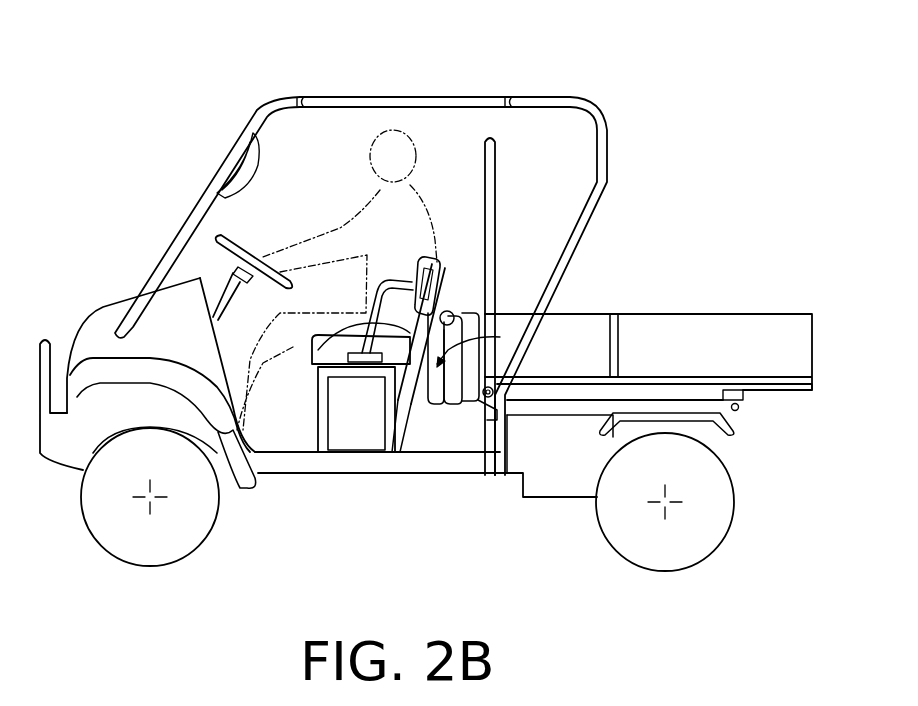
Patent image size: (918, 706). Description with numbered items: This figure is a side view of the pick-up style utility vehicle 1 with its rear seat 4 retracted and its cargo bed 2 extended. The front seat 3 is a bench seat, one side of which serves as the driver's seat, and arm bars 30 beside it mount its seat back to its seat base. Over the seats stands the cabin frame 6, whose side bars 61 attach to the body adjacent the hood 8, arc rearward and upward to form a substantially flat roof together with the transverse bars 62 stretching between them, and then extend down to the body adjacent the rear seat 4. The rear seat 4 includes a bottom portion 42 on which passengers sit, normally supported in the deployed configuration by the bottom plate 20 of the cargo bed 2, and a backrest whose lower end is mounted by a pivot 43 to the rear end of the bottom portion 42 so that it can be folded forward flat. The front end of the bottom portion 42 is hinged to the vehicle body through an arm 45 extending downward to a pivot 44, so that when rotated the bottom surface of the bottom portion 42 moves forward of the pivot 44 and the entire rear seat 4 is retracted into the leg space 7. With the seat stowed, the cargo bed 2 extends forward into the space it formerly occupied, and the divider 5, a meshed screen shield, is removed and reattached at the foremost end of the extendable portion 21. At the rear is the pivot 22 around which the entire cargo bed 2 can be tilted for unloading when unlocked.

The utility vehicle 1 is at (172, 202).
The cargo bed 2 is at (768, 315).
The front seat 3 is at (428, 267).
The rear seat 4 is at (467, 410).
The divider 5 is at (497, 162).
The cabin frame 6 is at (587, 100).
The leg space 7 is at (432, 427).
The hood 8 is at (103, 308).
The bottom plate 20 is at (793, 390).
The extendable portion 21 is at (580, 327).
The pivot 22 is at (740, 410).
The arm bars 30 is at (317, 367).
The bottom portion 42 is at (463, 320).
The pivot 43 is at (448, 312).
The pivot 44 is at (490, 400).
The arm 45 is at (453, 407).
The side bars 61 is at (412, 97).
The transverse bars 62 is at (299, 97).